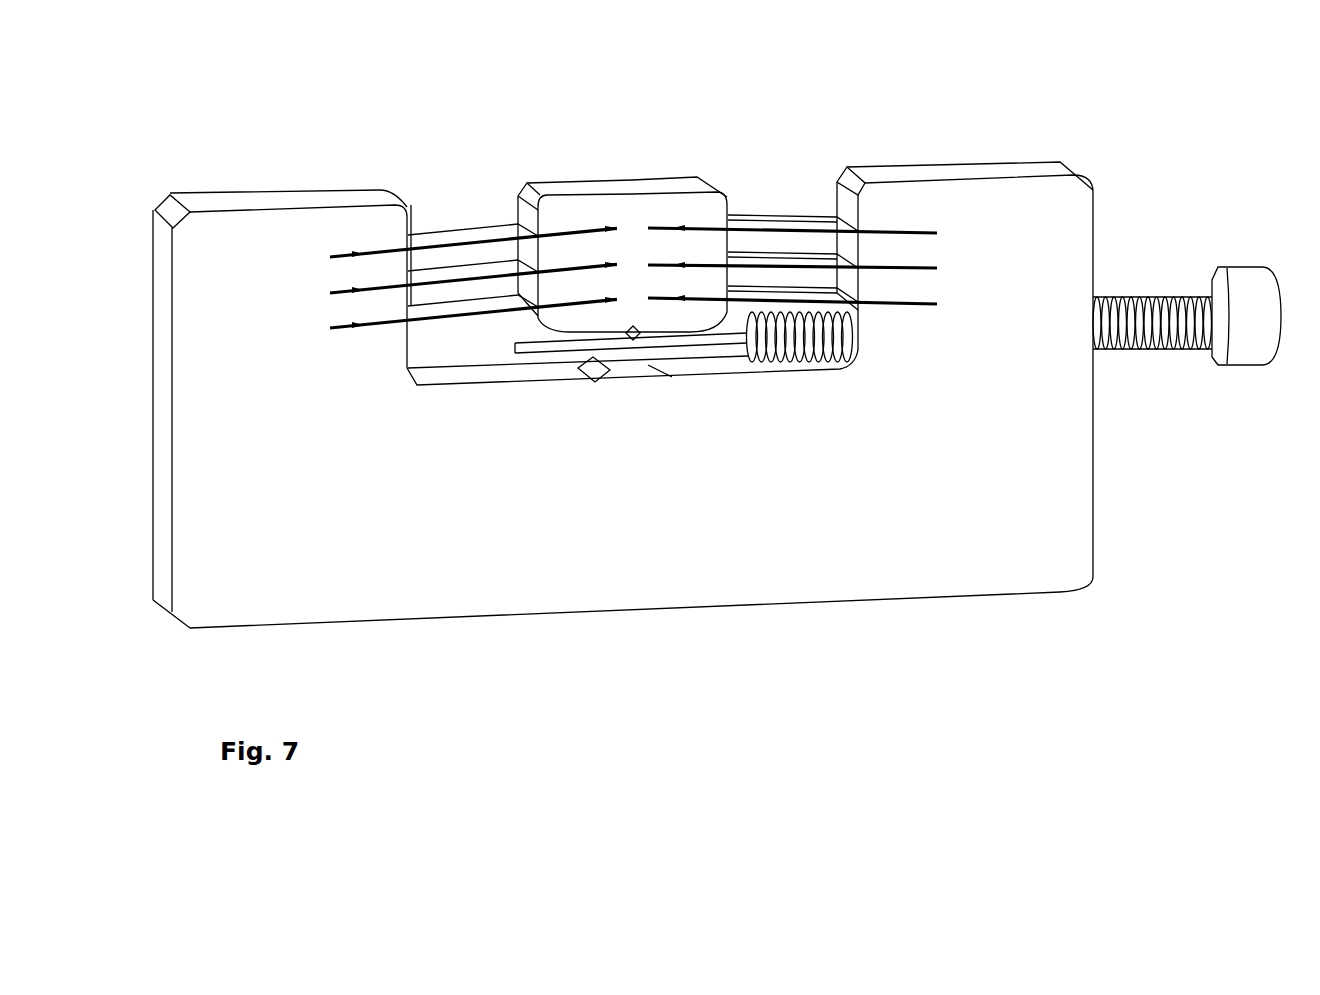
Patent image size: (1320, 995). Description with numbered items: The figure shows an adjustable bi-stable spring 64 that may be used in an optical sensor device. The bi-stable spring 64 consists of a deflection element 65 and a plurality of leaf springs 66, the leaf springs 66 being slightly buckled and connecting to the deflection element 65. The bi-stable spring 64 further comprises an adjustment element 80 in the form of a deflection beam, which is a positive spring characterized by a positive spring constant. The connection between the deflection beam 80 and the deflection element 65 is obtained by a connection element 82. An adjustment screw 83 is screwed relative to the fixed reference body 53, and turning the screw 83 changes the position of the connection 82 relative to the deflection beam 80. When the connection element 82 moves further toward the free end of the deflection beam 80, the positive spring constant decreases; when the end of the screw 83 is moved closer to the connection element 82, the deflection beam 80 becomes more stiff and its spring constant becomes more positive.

The fixed reference body 53 is at (885, 555).
The bi-stable spring 64 is at (587, 195).
The deflection element 65 is at (673, 203).
The leaf springs 66 is at (498, 232).
The adjustment element 80 is at (728, 338).
The connection element 82 is at (640, 340).
The adjustment screw 83 is at (1167, 340).